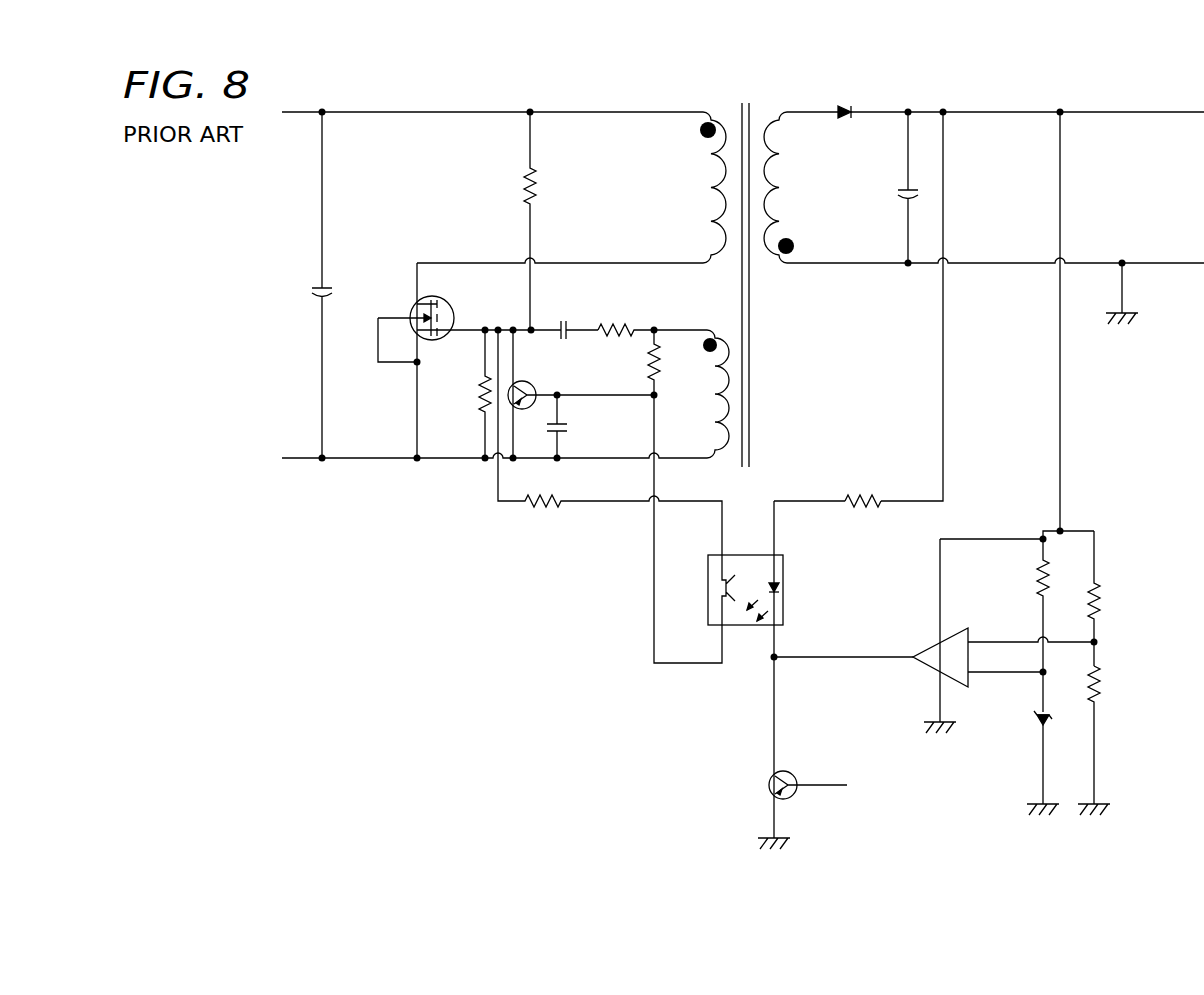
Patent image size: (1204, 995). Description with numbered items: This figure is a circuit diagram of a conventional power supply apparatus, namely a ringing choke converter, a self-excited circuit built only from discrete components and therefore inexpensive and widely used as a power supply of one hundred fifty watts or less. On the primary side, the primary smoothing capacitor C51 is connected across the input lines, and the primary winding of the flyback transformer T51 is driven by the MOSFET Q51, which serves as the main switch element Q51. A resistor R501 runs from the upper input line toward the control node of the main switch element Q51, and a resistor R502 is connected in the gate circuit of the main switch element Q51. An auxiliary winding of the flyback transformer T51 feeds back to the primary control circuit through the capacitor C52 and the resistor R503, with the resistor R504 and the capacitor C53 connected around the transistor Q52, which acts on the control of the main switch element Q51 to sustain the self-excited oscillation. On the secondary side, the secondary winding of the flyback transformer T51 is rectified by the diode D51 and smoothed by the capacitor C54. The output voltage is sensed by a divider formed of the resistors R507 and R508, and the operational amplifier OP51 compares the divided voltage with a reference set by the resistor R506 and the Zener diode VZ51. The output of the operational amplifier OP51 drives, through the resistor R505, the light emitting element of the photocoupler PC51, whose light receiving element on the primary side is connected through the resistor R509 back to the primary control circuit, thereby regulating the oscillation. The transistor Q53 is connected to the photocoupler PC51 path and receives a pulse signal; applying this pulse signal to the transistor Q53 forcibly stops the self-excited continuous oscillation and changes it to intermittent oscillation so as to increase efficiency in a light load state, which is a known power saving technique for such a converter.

The primary smoothing capacitor C51 is at (302, 285).
The resistor R501 is at (502, 221).
The main switch element Q51 is at (412, 360).
The resistor R502 is at (458, 394).
The capacitor C52 is at (571, 316).
The resistor R503 is at (651, 314).
The resistor R504 is at (628, 362).
The transistor Q52 is at (581, 394).
The capacitor C53 is at (576, 426).
The resistor R509 is at (610, 442).
The flyback transformer T51 is at (745, 271).
The diode D51 is at (995, 98).
The capacitor C54 is at (887, 187).
The resistor R505 is at (858, 309).
The photocoupler PC51 is at (774, 669).
The operational amplifier OP51 is at (934, 636).
The resistor R506 is at (1017, 412).
The resistor R507 is at (1121, 598).
The resistor R508 is at (1116, 740).
The Zener diode VZ51 is at (1020, 760).
The transistor Q53 is at (821, 810).